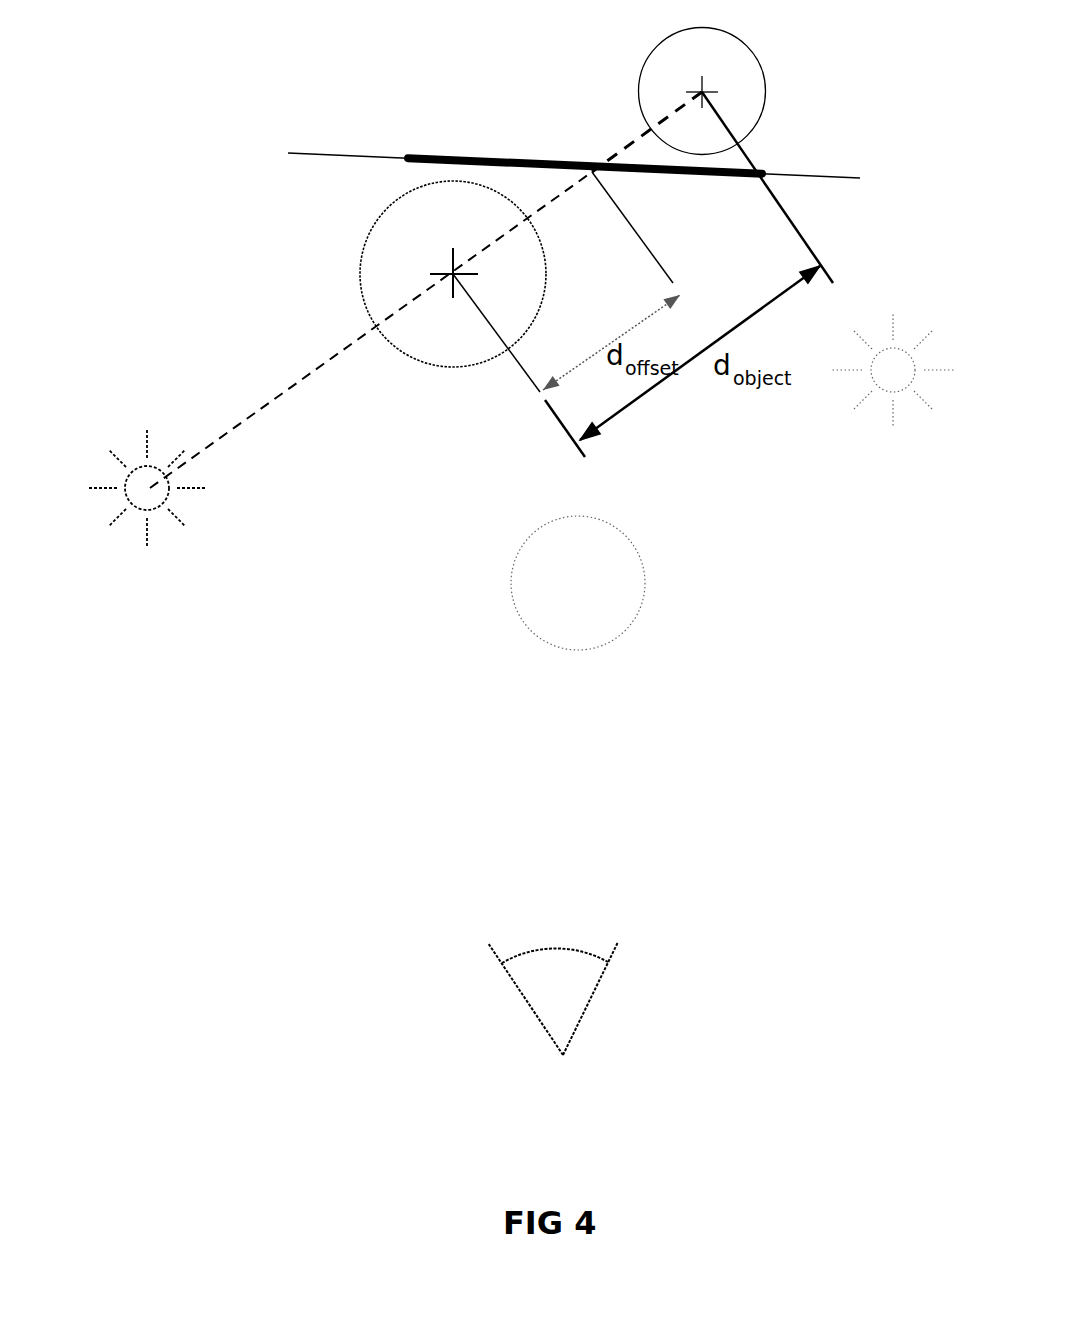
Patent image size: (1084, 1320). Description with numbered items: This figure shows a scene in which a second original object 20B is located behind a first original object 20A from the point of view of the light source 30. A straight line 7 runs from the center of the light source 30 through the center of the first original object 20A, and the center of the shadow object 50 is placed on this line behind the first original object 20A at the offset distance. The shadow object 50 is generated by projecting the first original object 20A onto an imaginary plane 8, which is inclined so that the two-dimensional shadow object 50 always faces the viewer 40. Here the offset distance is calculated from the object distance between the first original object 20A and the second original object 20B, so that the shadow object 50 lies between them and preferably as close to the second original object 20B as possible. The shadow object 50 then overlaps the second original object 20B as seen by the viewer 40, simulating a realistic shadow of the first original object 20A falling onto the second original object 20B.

The imaginary plane 8 is at (380, 157).
The shadow object 50 is at (546, 145).
The first original object 20A is at (345, 242).
The second original object 20B is at (782, 62).
The light source 30 is at (130, 434).
The straight line 7 is at (272, 398).
The viewer 40 is at (610, 1018).